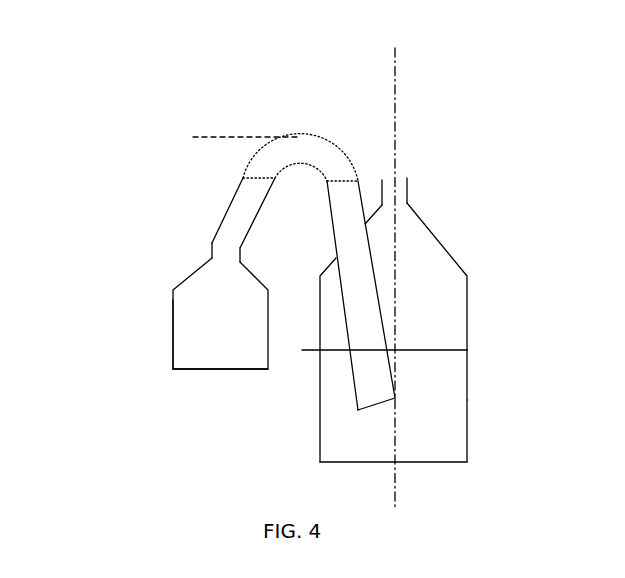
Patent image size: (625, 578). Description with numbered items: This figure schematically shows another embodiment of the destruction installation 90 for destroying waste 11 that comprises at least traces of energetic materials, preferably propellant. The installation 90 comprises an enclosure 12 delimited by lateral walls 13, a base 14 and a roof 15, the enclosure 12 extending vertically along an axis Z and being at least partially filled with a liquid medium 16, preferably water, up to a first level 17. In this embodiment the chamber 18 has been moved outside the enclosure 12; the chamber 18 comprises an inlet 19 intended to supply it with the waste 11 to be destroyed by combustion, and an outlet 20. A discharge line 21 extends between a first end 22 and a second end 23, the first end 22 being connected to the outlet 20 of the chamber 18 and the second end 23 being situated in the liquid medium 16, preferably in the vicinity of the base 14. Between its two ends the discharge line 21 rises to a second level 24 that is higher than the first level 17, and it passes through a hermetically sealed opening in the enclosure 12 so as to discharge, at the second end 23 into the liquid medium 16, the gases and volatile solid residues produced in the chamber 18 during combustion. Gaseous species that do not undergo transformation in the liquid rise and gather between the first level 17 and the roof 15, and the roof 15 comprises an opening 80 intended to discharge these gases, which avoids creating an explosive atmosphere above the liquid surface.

The destruction installation 90 is at (145, 70).
The waste 11 is at (171, 337).
The enclosure 12 is at (413, 318).
The lateral walls 13 is at (470, 407).
The base 14 is at (432, 463).
The roof 15 is at (377, 212).
The liquid medium 16 is at (455, 378).
The first level 17 is at (372, 353).
The chamber 18 is at (173, 360).
The inlet 19 is at (187, 343).
The outlet 20 is at (268, 270).
The discharge line 21 is at (363, 328).
The first end 22 is at (181, 220).
The second end 23 is at (372, 405).
The second level 24 is at (227, 138).
The opening 80 is at (407, 178).
The axis Z is at (393, 78).